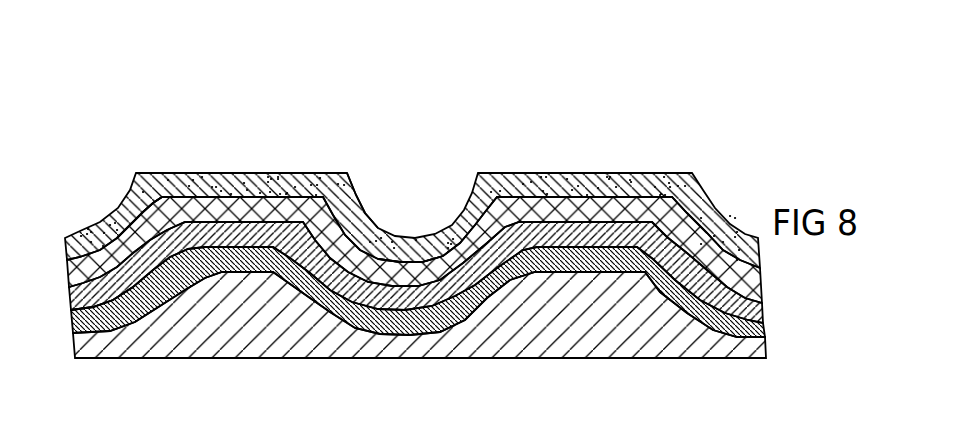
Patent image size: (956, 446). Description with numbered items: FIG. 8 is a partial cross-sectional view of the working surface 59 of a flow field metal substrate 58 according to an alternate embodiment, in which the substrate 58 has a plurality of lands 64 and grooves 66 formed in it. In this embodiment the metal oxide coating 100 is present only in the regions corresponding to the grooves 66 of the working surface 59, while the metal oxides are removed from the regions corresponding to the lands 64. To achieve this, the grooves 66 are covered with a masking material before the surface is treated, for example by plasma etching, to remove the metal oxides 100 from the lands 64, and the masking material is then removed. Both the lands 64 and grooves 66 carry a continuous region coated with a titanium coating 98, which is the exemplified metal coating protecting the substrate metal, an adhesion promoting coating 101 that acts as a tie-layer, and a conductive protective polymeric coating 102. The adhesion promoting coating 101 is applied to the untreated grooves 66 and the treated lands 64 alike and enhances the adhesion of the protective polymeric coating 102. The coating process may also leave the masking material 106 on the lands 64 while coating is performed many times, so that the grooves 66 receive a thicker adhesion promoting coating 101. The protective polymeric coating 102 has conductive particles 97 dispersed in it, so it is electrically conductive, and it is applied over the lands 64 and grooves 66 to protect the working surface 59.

The substrate 58 is at (495, 343).
The working surface 59 is at (638, 217).
The lands 64 is at (580, 222).
The grooves 66 is at (466, 262).
The conductive particles 97 is at (293, 173).
The titanium coating 98 is at (118, 310).
The metal oxide coating 100 is at (157, 272).
The adhesion promoting coating 101 is at (415, 272).
The conductive protective polymeric coating 102 is at (378, 242).
The masking material 106 is at (405, 290).